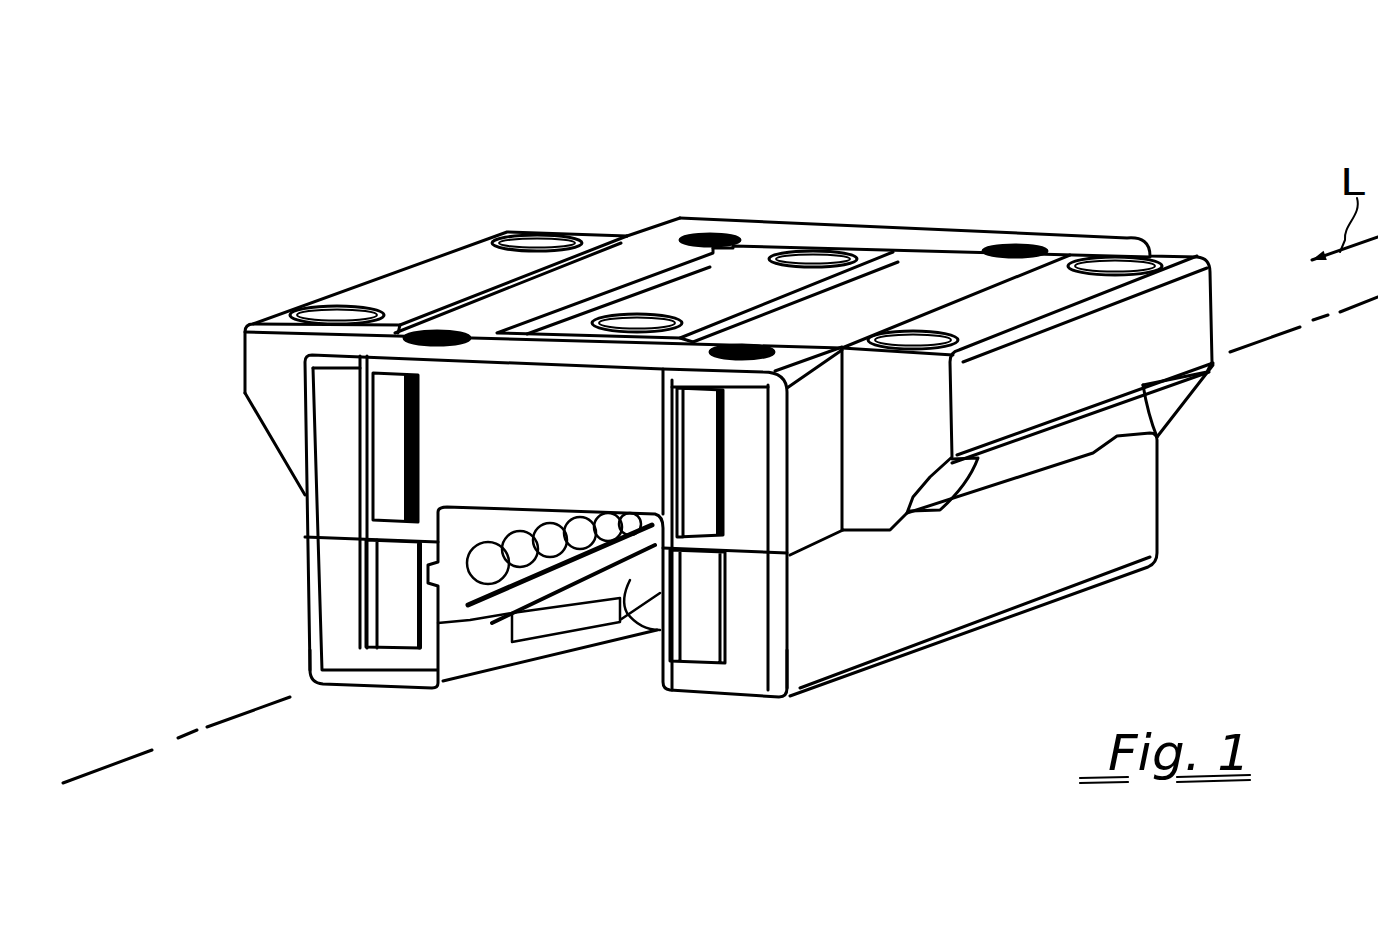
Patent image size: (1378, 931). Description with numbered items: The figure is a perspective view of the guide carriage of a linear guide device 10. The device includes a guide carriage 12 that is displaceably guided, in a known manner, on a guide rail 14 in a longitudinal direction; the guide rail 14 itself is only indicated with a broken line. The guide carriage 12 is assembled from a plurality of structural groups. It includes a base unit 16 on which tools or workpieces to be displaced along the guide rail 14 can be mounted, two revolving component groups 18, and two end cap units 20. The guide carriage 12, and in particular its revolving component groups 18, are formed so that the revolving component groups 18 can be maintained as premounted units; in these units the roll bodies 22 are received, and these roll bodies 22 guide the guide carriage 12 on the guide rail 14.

The linear guide device 10 is at (238, 128).
The guide carriage 12 is at (942, 162).
The guide rail 14 is at (248, 712).
The base unit 16 is at (437, 262).
The revolving component group 18 is at (395, 662).
The end cap unit 20 is at (958, 243).
The roll bodies 22 is at (553, 573).